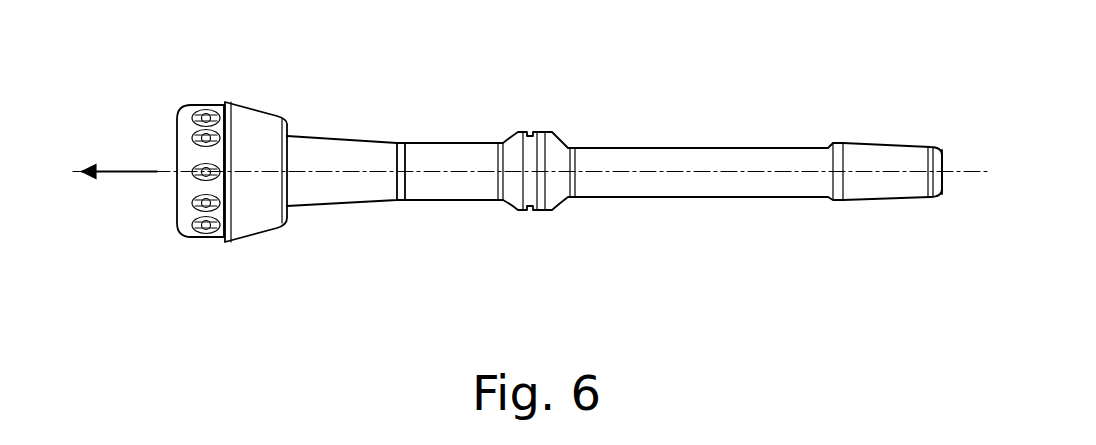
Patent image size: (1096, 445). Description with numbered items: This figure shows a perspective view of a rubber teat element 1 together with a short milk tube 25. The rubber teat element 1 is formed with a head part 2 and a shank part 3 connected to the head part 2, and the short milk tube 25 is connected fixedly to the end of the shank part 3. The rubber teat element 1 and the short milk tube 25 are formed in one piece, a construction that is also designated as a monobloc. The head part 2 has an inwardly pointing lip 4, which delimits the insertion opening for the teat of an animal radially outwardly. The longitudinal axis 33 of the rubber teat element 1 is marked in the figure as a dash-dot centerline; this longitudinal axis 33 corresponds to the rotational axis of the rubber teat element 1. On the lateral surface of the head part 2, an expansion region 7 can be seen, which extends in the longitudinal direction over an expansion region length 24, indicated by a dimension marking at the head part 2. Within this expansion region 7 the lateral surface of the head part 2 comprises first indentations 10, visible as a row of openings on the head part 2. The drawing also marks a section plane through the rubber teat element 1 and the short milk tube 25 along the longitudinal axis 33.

The rubber teat element 1 is at (378, 98).
The head part 2 is at (292, 287).
The shank part 3 is at (440, 188).
The lip 4 is at (187, 153).
The expansion region 7 is at (225, 250).
The first indentations 10 is at (187, 203).
The expansion region length 24 is at (240, 89).
The short milk tube 25 is at (698, 188).
The longitudinal axis 33 is at (967, 170).